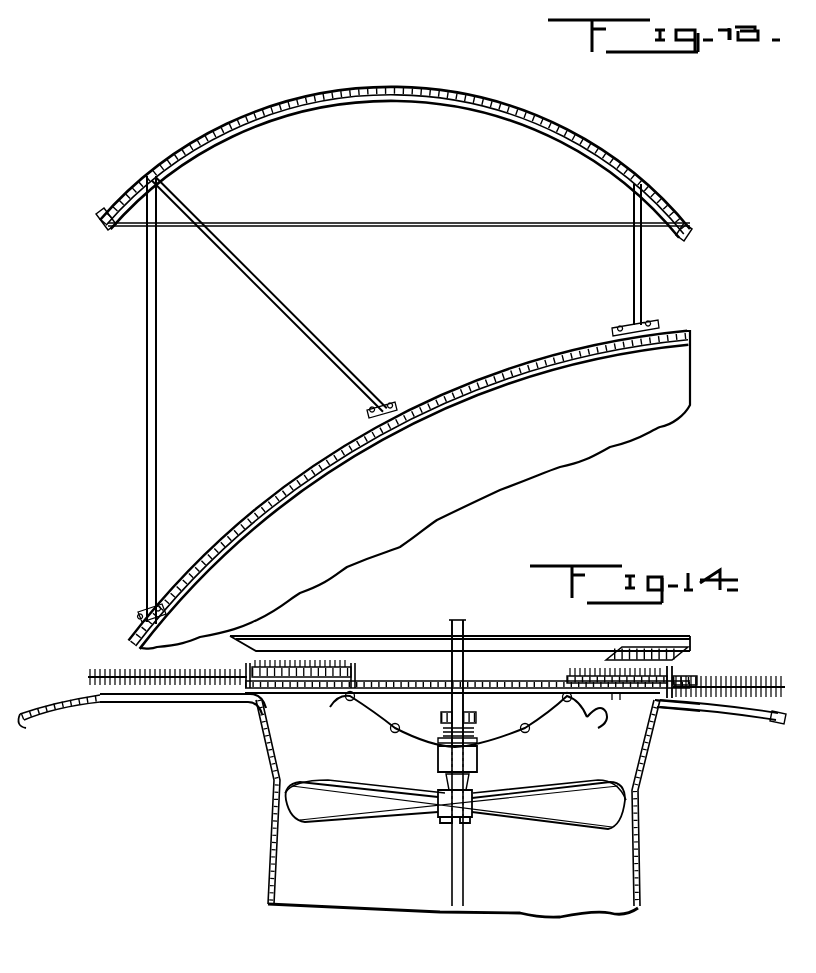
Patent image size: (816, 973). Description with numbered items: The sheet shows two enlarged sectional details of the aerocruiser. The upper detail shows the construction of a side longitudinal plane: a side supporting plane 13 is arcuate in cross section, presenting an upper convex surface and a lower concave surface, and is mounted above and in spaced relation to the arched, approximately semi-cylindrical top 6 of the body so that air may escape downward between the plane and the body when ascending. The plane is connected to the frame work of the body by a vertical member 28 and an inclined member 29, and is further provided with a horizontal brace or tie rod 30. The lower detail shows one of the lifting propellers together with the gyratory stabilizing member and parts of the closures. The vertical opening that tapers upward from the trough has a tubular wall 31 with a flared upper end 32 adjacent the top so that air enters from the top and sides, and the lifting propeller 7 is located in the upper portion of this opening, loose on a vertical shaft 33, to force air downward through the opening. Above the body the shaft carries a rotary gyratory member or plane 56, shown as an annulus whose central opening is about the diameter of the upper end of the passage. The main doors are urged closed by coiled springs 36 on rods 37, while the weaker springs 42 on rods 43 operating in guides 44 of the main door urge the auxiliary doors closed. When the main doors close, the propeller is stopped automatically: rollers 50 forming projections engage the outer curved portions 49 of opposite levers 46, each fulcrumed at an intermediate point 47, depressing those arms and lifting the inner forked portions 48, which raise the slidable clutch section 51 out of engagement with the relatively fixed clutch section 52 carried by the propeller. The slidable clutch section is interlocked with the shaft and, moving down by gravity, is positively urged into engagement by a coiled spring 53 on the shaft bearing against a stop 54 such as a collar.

In FIG. 13, the top 6 is at (672, 326).
In FIG. 14, the top 6 is at (80, 705).
In FIG. 14, the lifting propeller 7 is at (580, 823).
In FIG. 13, the side supporting plane 13 is at (585, 148).
In FIG. 13, the vertical member 28 is at (145, 263).
In FIG. 13, the inclined member 29 is at (232, 263).
In FIG. 13, the horizontal brace or tie rod 30 is at (591, 230).
In FIG. 14, the tubular wall 31 is at (266, 900).
In FIG. 14, the flared upper end 32 is at (350, 690).
In FIG. 14, the vertical shaft 33 is at (466, 866).
In FIG. 14, the coiled spring 36 is at (185, 673).
In FIG. 14, the rod 37 is at (148, 696).
In FIG. 14, the spring 42 is at (300, 675).
In FIG. 14, the rod 43 is at (272, 675).
In FIG. 14, the guide 44 is at (690, 672).
In FIG. 14, the lever 46 is at (545, 722).
In FIG. 14, the fulcrum 47 is at (528, 733).
In FIG. 14, the inner forked portion 48 is at (484, 737).
In FIG. 14, the outer curved portion 49 is at (600, 726).
In FIG. 14, the roller 50 is at (285, 712).
In FIG. 14, the slidable clutch section 51 is at (436, 765).
In FIG. 14, the fixed clutch section 52 is at (445, 800).
In FIG. 14, the coiled spring 53 is at (440, 733).
In FIG. 14, the stop 54 is at (470, 710).
In FIG. 14, the rotary gyratory member or plane 56 is at (396, 636).